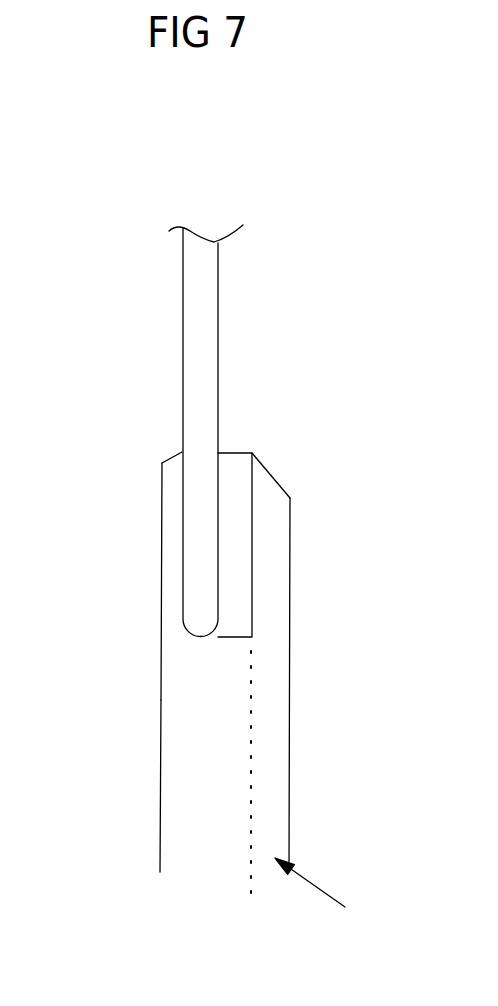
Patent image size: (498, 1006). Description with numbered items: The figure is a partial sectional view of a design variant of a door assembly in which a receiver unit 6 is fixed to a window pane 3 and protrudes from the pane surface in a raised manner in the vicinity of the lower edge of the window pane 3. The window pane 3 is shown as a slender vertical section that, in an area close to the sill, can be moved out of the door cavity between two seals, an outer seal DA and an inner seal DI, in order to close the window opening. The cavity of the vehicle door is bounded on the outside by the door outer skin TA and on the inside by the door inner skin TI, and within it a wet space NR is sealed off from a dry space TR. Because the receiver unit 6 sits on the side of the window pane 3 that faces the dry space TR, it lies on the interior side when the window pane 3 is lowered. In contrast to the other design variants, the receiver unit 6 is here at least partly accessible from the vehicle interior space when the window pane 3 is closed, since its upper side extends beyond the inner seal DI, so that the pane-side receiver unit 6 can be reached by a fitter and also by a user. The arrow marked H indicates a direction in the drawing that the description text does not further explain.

The window pane 3 is at (180, 327).
The outer seal DA is at (162, 463).
The door outer skin TA is at (162, 578).
The wet space NR is at (177, 725).
The receiver unit 6 is at (228, 483).
The inner seal DI is at (278, 483).
The door inner skin TI is at (291, 565).
The dry space TR is at (267, 742).
The stroke direction H is at (324, 893).